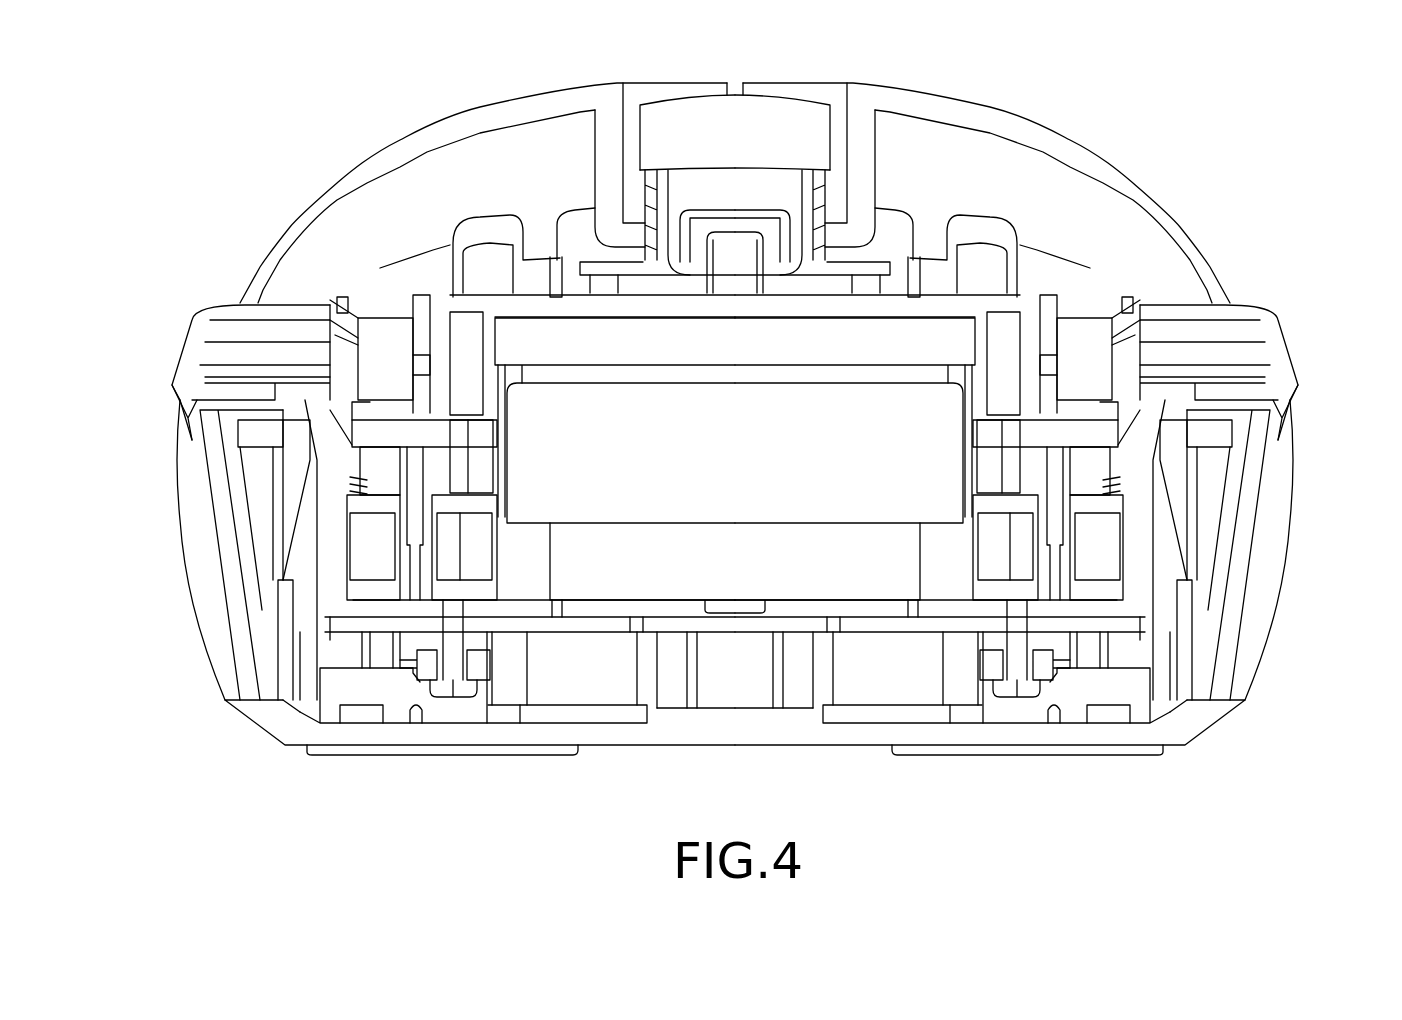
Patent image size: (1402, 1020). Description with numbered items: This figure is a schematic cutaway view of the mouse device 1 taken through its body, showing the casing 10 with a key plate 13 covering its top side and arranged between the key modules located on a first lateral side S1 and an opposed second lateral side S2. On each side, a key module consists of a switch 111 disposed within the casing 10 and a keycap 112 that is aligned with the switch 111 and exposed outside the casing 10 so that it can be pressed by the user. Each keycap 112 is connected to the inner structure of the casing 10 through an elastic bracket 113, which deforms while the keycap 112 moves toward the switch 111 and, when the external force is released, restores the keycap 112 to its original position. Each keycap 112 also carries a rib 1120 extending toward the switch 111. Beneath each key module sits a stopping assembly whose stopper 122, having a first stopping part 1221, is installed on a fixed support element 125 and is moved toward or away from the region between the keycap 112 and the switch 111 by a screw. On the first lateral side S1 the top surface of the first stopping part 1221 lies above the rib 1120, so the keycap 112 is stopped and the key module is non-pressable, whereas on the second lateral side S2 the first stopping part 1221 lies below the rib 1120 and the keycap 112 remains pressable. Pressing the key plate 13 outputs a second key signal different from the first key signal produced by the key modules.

The mouse device 1 is at (1213, 103).
The casing 10 is at (1243, 673).
The key plate 13 is at (1005, 128).
The switch 111 is at (387, 348).
The keycap 112 is at (193, 350).
The rib 1120 is at (280, 367).
The elastic bracket 113 is at (308, 493).
The stopper 122 is at (400, 432).
The first stopping part 1221 is at (348, 365).
The support element 125 is at (352, 588).
The first lateral side S1 is at (150, 377).
The second lateral side S2 is at (1320, 377).